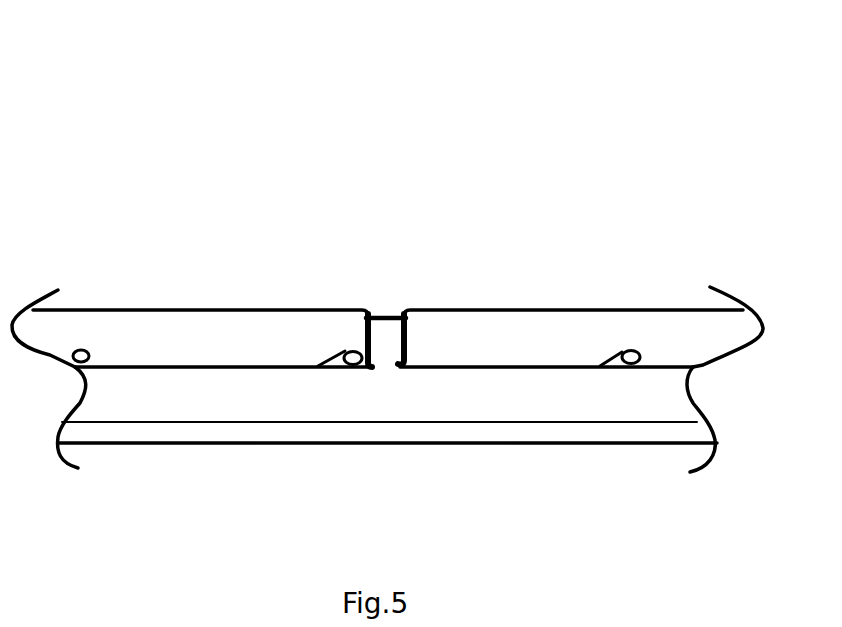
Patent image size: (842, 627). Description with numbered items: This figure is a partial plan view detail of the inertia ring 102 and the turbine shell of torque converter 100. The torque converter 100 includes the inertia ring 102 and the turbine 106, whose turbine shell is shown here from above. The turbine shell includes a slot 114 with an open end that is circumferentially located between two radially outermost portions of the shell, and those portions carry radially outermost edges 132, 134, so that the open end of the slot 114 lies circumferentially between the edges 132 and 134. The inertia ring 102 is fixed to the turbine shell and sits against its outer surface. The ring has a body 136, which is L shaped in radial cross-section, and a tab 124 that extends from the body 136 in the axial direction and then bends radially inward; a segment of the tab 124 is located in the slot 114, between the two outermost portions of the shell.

The torque converter 100 is at (713, 150).
The inertia ring 102 is at (617, 447).
The turbine 106 is at (622, 306).
The slot 114 is at (380, 308).
The tab 124 is at (386, 310).
The radially outermost edge 132 is at (233, 309).
The radially outermost edge 134 is at (573, 308).
The body 136 is at (232, 397).